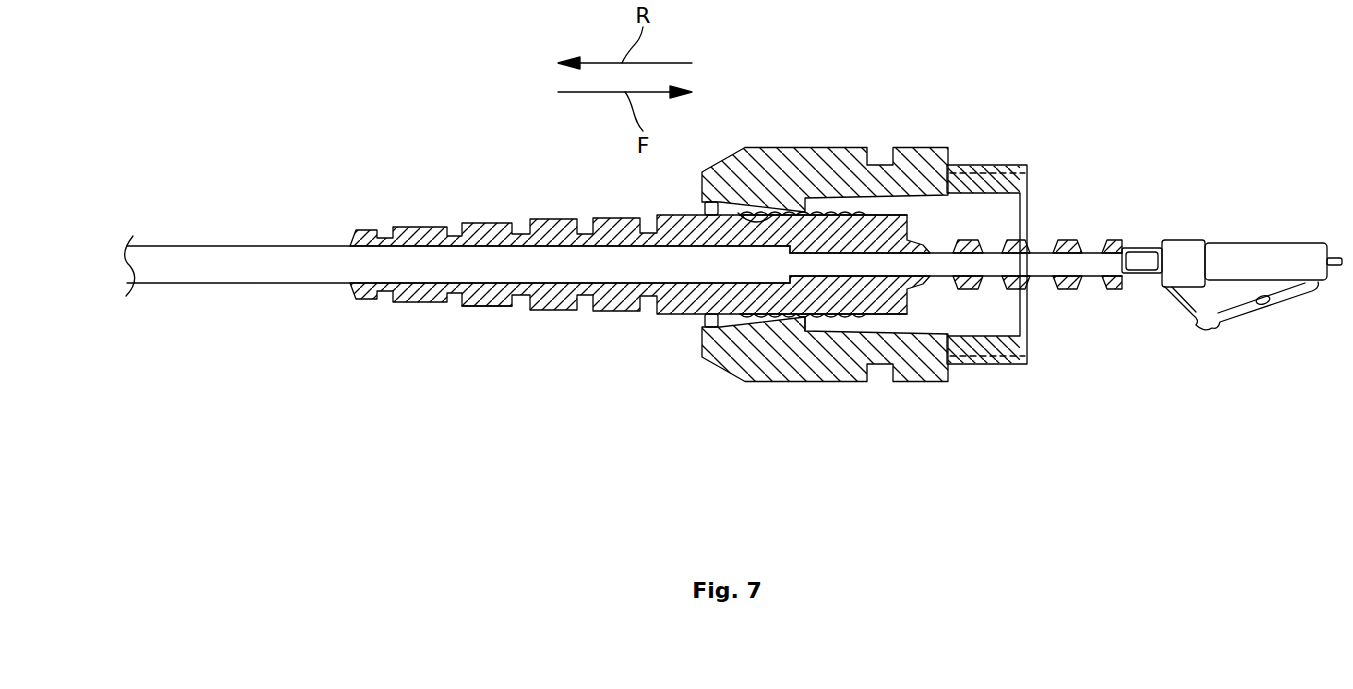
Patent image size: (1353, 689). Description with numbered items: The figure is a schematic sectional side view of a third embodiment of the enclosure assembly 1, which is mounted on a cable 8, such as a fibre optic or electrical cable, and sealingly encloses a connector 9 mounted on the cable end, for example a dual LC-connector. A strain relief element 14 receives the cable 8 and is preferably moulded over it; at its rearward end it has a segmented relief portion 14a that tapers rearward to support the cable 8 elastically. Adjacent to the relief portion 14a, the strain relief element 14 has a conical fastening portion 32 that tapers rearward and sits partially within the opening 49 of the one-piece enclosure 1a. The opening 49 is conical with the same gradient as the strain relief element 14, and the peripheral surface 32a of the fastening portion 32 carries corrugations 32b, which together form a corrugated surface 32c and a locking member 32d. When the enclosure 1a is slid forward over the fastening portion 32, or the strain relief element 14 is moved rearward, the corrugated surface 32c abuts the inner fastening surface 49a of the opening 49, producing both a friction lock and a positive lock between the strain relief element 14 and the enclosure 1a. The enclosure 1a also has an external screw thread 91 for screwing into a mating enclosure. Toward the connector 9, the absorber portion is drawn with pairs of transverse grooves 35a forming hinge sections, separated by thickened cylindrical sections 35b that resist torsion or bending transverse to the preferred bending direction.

The enclosure assembly 1 is at (744, 63).
The enclosure 1a is at (814, 124).
The cable 8 is at (238, 278).
The connector 9 is at (1267, 252).
The strain relief element 14 is at (556, 205).
The relief portion 14a is at (500, 306).
The fastening portion 32 is at (752, 340).
The peripheral surface 32a is at (810, 321).
The corrugations 32b is at (853, 212).
The corrugated surface 32c is at (835, 321).
The locking member 32d is at (803, 315).
The grooves 35a is at (1042, 281).
The cylindrical sections 35b is at (1027, 241).
The opening 49 is at (700, 322).
The inner fastening surface 49a is at (740, 198).
The external screw thread 91 is at (995, 165).